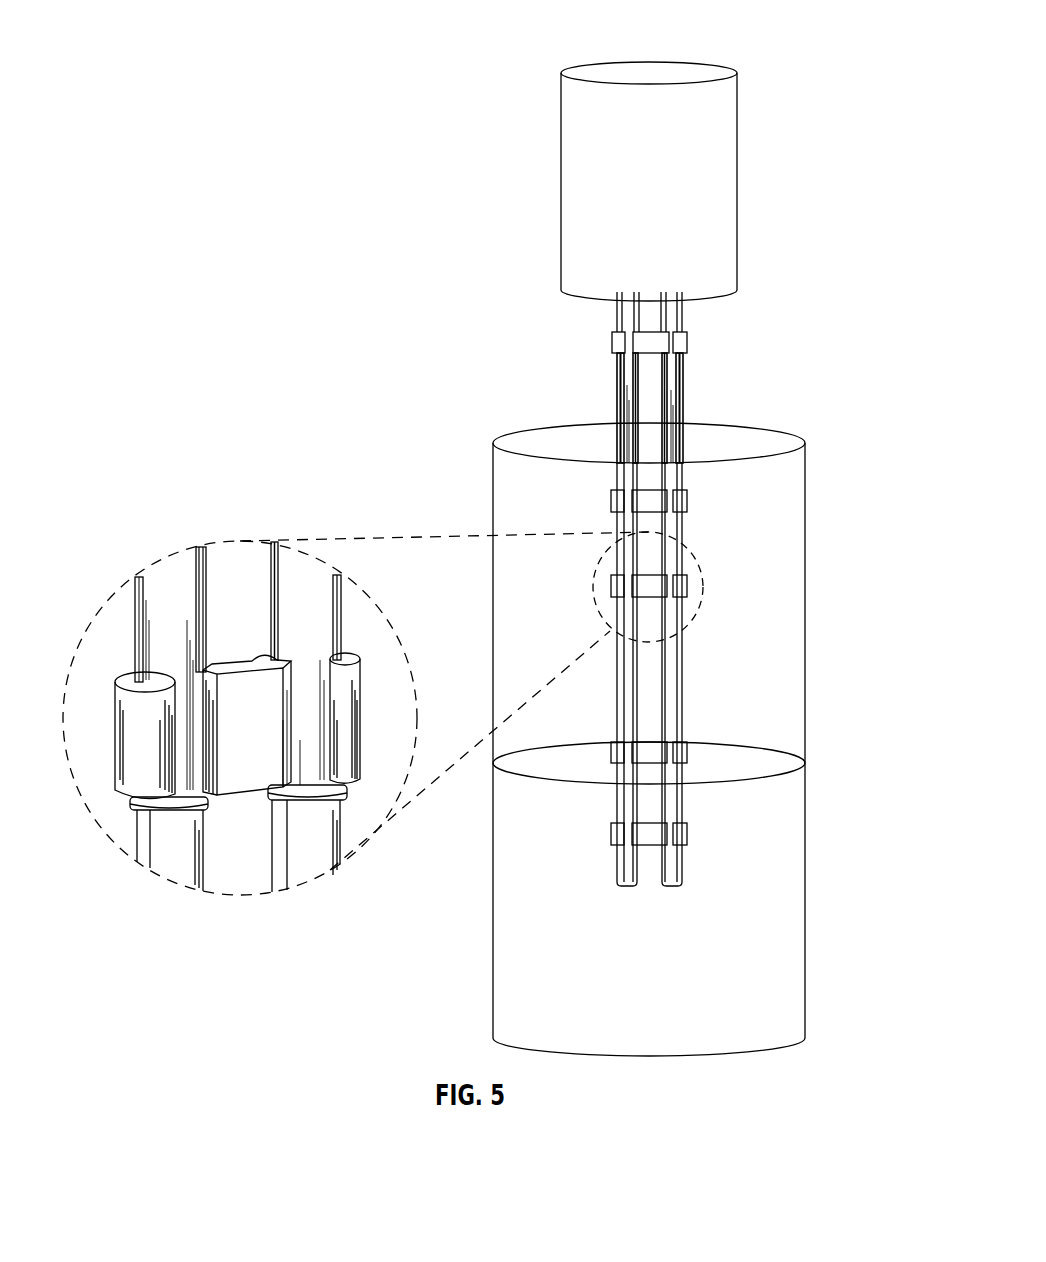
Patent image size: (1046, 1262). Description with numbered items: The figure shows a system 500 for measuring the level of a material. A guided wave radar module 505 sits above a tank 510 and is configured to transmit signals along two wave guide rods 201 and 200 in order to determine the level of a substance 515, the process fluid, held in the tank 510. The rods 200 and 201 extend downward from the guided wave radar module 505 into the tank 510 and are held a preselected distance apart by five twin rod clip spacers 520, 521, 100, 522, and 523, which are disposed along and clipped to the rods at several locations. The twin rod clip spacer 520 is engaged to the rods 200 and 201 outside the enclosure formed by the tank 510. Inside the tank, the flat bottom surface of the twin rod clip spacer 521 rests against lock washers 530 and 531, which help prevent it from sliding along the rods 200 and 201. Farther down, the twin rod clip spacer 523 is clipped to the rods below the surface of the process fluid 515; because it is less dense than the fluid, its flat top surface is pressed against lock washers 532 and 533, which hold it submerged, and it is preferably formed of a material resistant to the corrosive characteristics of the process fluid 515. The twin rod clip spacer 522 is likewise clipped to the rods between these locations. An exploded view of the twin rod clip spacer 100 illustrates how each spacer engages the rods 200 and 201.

The system 500 is at (131, 36).
The guided wave radar module 505 is at (561, 165).
The tank 510 is at (504, 418).
The substance 515 is at (529, 934).
The twin rod clip spacer 520 is at (688, 342).
The twin rod clip spacer 521 is at (687, 492).
The twin rod clip spacer 522 is at (688, 742).
The twin rod clip spacer 523 is at (697, 848).
The lock washer 530 is at (611, 510).
The lock washer 531 is at (687, 510).
The lock washer 532 is at (612, 823).
The lock washer 533 is at (696, 835).
The twin rod clip spacer 100 is at (122, 642).
The wave guide rod 200 is at (670, 648).
The wave guide rod 201 is at (627, 723).